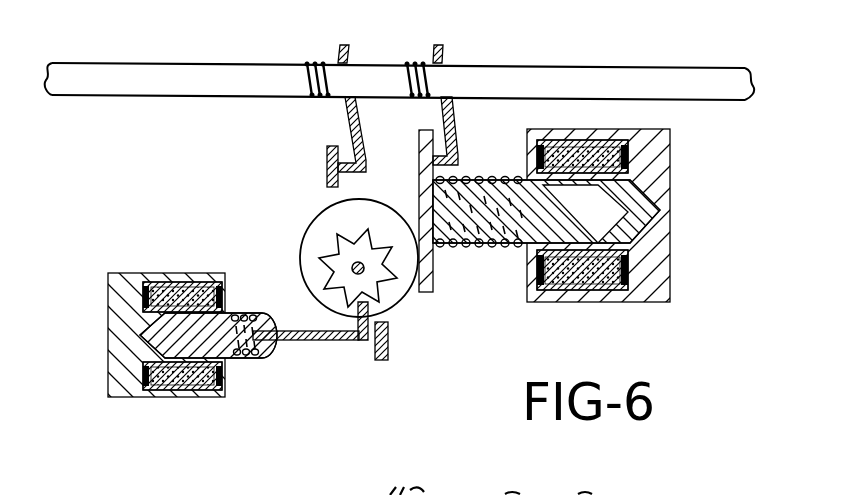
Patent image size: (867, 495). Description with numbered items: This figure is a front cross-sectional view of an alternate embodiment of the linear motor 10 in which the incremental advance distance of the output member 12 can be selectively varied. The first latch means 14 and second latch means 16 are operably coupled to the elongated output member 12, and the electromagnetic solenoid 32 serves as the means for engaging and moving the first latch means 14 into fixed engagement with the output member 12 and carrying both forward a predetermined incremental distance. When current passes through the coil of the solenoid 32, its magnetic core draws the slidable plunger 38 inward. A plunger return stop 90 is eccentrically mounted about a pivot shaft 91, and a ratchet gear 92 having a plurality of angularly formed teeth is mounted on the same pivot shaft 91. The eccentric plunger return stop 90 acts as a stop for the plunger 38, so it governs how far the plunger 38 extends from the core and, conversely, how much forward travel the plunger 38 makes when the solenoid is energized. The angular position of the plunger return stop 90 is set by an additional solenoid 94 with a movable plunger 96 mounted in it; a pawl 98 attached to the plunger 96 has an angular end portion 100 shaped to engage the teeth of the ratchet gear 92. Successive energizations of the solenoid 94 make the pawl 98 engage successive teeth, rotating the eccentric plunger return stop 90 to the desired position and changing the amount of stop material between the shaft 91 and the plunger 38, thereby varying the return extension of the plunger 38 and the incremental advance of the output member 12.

The linear motor 10 is at (753, 235).
The output member 12 is at (698, 77).
The first latch means 14 is at (459, 96).
The second latch means 16 is at (343, 122).
The electromagnetic solenoid 32 is at (666, 211).
The plunger 38 is at (575, 236).
The plunger return stop 90 is at (316, 221).
The pivot shaft 91 is at (366, 270).
The ratchet gear 92 is at (340, 272).
The additional solenoid 94 is at (138, 246).
The movable plunger 96 is at (168, 342).
The pawl 98 is at (310, 330).
The angular end portion 100 is at (351, 318).